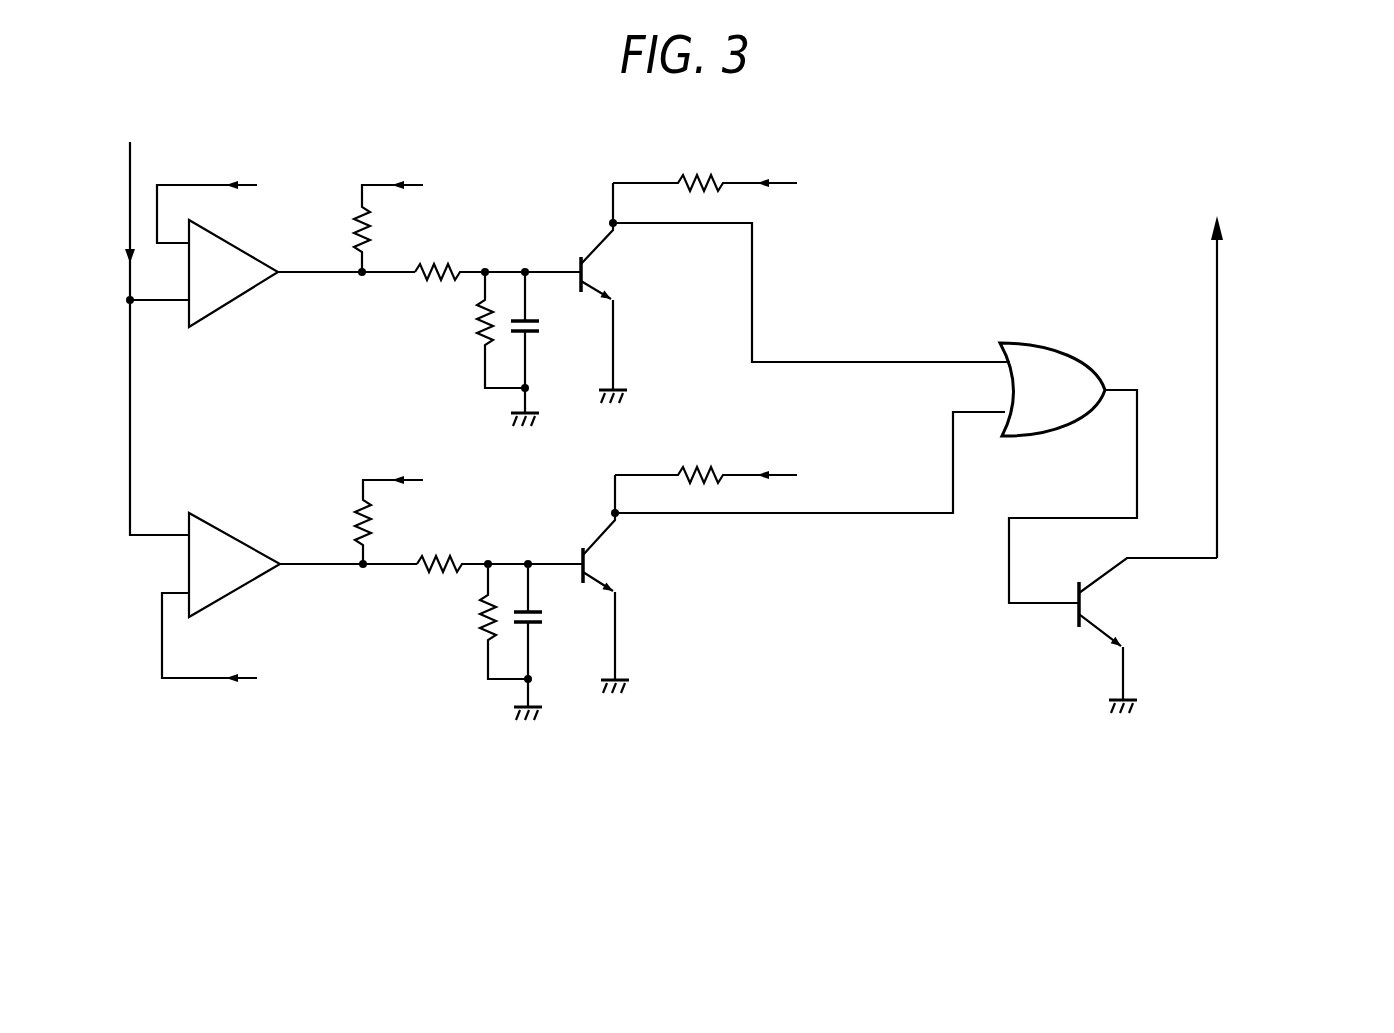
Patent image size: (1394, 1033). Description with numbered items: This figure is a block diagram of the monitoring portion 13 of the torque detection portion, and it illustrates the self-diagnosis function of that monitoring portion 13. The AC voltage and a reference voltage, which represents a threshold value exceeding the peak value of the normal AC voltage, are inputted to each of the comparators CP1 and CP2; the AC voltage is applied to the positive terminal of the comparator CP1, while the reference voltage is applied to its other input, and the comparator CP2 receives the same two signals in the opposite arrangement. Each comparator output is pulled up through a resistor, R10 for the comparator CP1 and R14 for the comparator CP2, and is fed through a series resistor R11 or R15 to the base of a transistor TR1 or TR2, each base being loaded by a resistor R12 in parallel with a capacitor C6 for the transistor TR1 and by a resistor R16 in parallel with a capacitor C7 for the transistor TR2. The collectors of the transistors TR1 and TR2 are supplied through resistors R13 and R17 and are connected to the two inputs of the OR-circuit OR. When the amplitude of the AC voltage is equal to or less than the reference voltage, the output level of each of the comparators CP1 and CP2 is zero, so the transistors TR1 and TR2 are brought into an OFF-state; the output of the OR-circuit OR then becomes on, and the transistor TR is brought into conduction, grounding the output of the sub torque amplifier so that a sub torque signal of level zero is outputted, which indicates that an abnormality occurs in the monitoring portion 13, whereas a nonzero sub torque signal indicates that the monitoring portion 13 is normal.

The monitoring portion 13 is at (832, 668).
The comparator CP1 is at (234, 277).
The comparator CP2 is at (234, 570).
The resistor R10 is at (388, 226).
The resistor R11 is at (498, 257).
The resistor R12 is at (477, 330).
The resistor R13 is at (705, 167).
The resistor R14 is at (389, 520).
The resistor R15 is at (500, 549).
The resistor R16 is at (480, 621).
The resistor R17 is at (706, 459).
The capacitor C6 is at (543, 342).
The capacitor C7 is at (546, 635).
The transistor TR1 is at (583, 286).
The transistor TR2 is at (585, 577).
The transistor TR is at (1139, 629).
The OR-circuit OR is at (1063, 351).